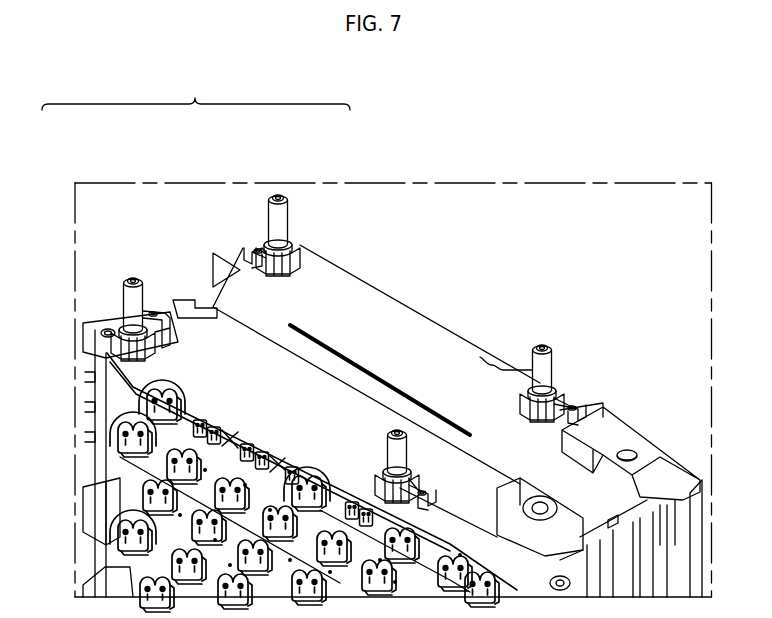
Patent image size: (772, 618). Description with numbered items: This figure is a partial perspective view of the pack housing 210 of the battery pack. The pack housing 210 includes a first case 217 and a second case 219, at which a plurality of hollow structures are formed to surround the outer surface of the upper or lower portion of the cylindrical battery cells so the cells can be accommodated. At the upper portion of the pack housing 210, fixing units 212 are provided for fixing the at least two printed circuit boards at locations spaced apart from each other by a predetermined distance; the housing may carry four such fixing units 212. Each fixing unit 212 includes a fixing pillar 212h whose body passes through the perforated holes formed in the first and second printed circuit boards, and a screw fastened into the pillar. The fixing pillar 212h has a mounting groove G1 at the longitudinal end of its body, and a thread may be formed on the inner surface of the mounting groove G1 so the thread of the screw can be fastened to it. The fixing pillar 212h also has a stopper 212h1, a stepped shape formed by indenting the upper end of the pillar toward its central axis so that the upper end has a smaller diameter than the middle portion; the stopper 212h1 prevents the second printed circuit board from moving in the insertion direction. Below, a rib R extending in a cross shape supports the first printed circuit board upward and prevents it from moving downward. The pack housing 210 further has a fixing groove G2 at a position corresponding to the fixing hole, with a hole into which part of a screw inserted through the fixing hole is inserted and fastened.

The pack housing 210 is at (196, 90).
The fixing unit 212 is at (143, 278).
The fixing pillar 212h is at (123, 297).
The stopper 212h1 is at (413, 440).
The first case 217 is at (105, 328).
The second case 219 is at (383, 307).
The mounting groove G1 is at (397, 434).
The fixing groove G2 is at (150, 312).
The rib R is at (118, 325).